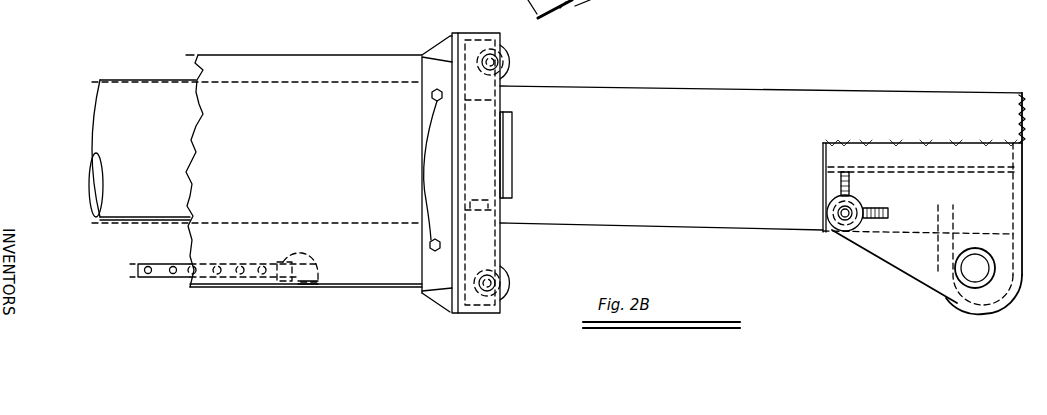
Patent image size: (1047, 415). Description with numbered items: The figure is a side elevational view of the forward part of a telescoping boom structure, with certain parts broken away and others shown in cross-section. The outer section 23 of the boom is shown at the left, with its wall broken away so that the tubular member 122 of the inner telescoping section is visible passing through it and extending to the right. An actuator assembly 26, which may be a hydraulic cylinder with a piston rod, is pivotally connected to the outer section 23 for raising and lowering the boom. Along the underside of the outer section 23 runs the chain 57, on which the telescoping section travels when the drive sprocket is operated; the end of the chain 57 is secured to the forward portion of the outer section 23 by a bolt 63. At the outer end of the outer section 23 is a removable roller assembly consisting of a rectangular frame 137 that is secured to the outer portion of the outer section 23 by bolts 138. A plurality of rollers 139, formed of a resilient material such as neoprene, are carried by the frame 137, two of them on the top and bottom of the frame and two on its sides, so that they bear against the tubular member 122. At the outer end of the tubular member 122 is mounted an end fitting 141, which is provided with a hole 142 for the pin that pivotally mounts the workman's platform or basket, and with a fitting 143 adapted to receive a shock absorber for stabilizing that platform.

The outer section 23 is at (242, 55).
The actuator assembly 26 is at (566, 6).
The chain 57 is at (163, 272).
The bolt 63 is at (317, 284).
The tubular member 122 is at (698, 96).
The rectangular frame 137 is at (440, 50).
The bolts 138 is at (428, 240).
The rollers 139 is at (506, 72).
The end fitting 141 is at (905, 262).
The hole 142 is at (963, 278).
The fitting 143 is at (840, 228).